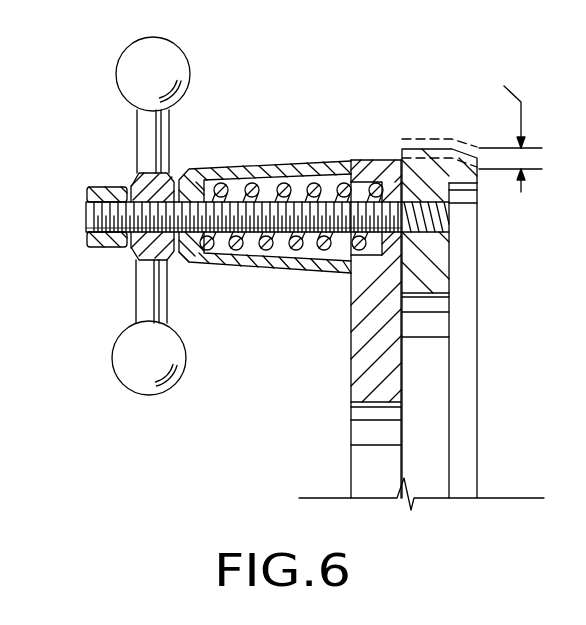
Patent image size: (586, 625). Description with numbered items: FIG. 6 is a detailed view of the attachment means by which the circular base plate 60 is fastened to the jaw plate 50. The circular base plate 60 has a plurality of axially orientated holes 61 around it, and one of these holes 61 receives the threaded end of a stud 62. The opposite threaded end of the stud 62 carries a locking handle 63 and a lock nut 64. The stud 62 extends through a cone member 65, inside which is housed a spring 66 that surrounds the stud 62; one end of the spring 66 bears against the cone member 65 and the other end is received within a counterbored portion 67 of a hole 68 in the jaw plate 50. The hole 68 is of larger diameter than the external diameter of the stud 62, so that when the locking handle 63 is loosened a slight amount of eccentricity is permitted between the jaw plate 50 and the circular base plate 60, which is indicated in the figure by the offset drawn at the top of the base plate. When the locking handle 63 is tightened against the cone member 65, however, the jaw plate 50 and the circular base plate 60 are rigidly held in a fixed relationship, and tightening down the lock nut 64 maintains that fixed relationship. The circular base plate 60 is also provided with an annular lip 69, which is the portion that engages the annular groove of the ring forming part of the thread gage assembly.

The jaw plate 50 is at (368, 382).
The circular base plate 60 is at (428, 265).
The axial orientated holes 61 is at (470, 222).
The stud 62 is at (297, 210).
The locking handle 63 is at (150, 135).
The lock nut 64 is at (98, 247).
The cone member 65 is at (242, 172).
The spring 66 is at (268, 247).
The counterbored portion 67 is at (355, 256).
The hole 68 is at (380, 257).
The annular lip 69 is at (462, 178).